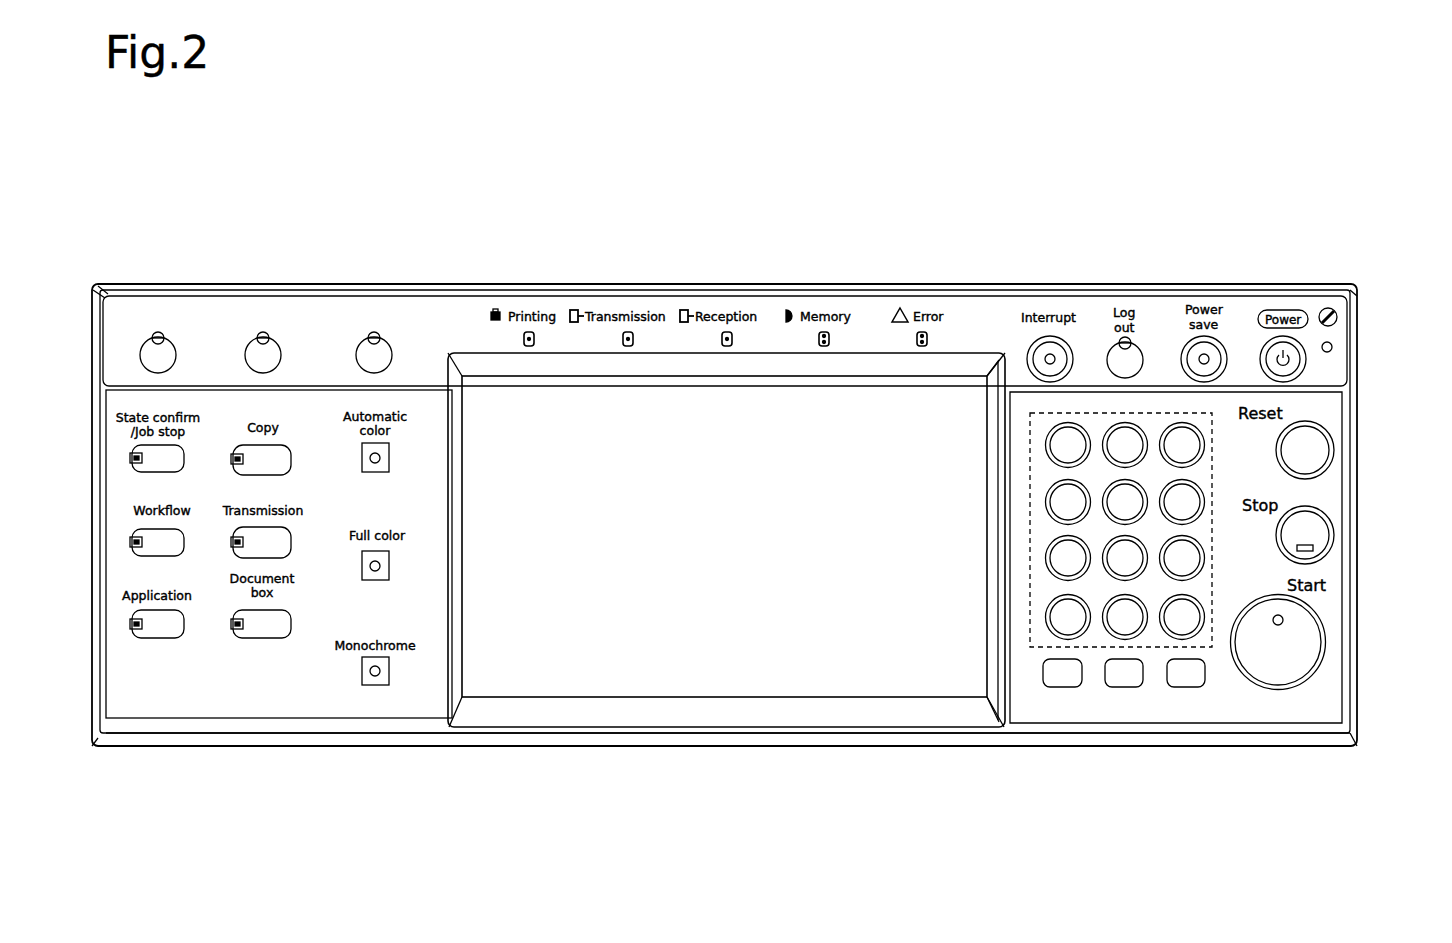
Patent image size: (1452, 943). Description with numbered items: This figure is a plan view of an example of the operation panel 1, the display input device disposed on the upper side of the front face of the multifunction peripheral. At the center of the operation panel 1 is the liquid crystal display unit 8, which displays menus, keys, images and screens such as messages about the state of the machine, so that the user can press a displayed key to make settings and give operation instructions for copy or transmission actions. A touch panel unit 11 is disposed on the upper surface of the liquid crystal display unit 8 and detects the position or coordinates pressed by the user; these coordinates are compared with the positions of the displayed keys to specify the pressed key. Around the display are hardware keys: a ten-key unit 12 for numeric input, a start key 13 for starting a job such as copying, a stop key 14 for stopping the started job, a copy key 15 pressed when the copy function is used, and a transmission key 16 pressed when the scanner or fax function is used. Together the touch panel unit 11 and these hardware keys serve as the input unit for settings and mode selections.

The operation panel 1 is at (102, 274).
The liquid crystal display unit 8 is at (680, 665).
The touch panel unit 11 is at (825, 665).
The ten-key unit 12 is at (1038, 647).
The start key 13 is at (1305, 648).
The stop key 14 is at (1317, 535).
The copy key 15 is at (268, 465).
The transmission key 16 is at (280, 538).